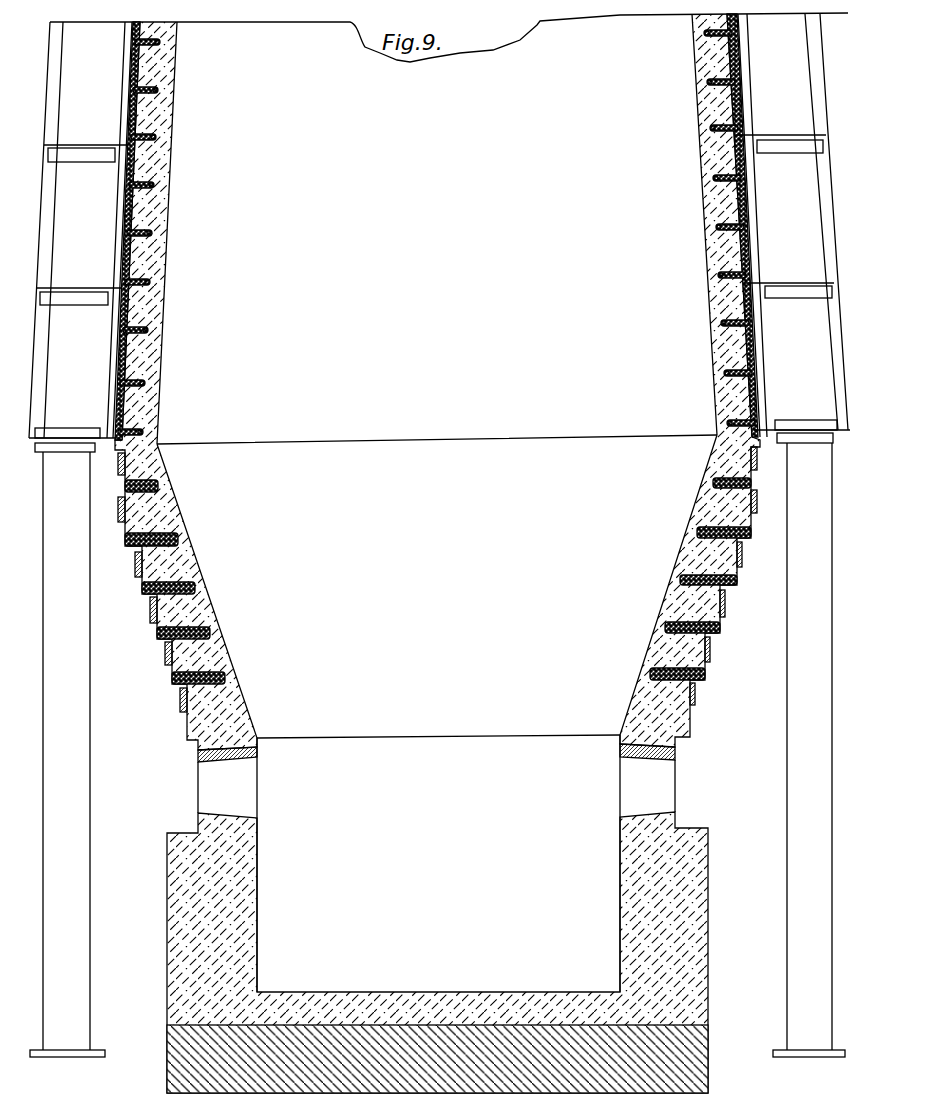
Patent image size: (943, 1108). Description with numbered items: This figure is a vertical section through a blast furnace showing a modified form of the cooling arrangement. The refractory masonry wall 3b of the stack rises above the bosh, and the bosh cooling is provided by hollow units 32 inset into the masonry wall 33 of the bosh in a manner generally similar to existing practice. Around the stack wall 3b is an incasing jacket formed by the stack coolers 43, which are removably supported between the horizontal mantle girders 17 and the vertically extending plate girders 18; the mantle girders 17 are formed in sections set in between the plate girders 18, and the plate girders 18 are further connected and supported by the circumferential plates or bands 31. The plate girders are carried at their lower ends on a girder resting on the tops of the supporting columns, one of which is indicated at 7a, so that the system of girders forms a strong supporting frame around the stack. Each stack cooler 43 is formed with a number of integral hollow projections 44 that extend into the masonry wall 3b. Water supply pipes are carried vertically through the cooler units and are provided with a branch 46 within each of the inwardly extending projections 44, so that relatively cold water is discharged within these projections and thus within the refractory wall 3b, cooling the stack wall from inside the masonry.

The masonry wall of the stack 3b is at (710, 202).
The supporting column 7a is at (437, 745).
The mantle girders 17 is at (90, 141).
The plate girders 18 is at (448, 226).
The circumferential plates or bands 31 is at (438, 226).
The hollow units 32 is at (710, 530).
The masonry wall 33 is at (688, 557).
The stack coolers 43 is at (133, 70).
The integral hollow projections 44 is at (160, 134).
The branch 46 is at (160, 183).